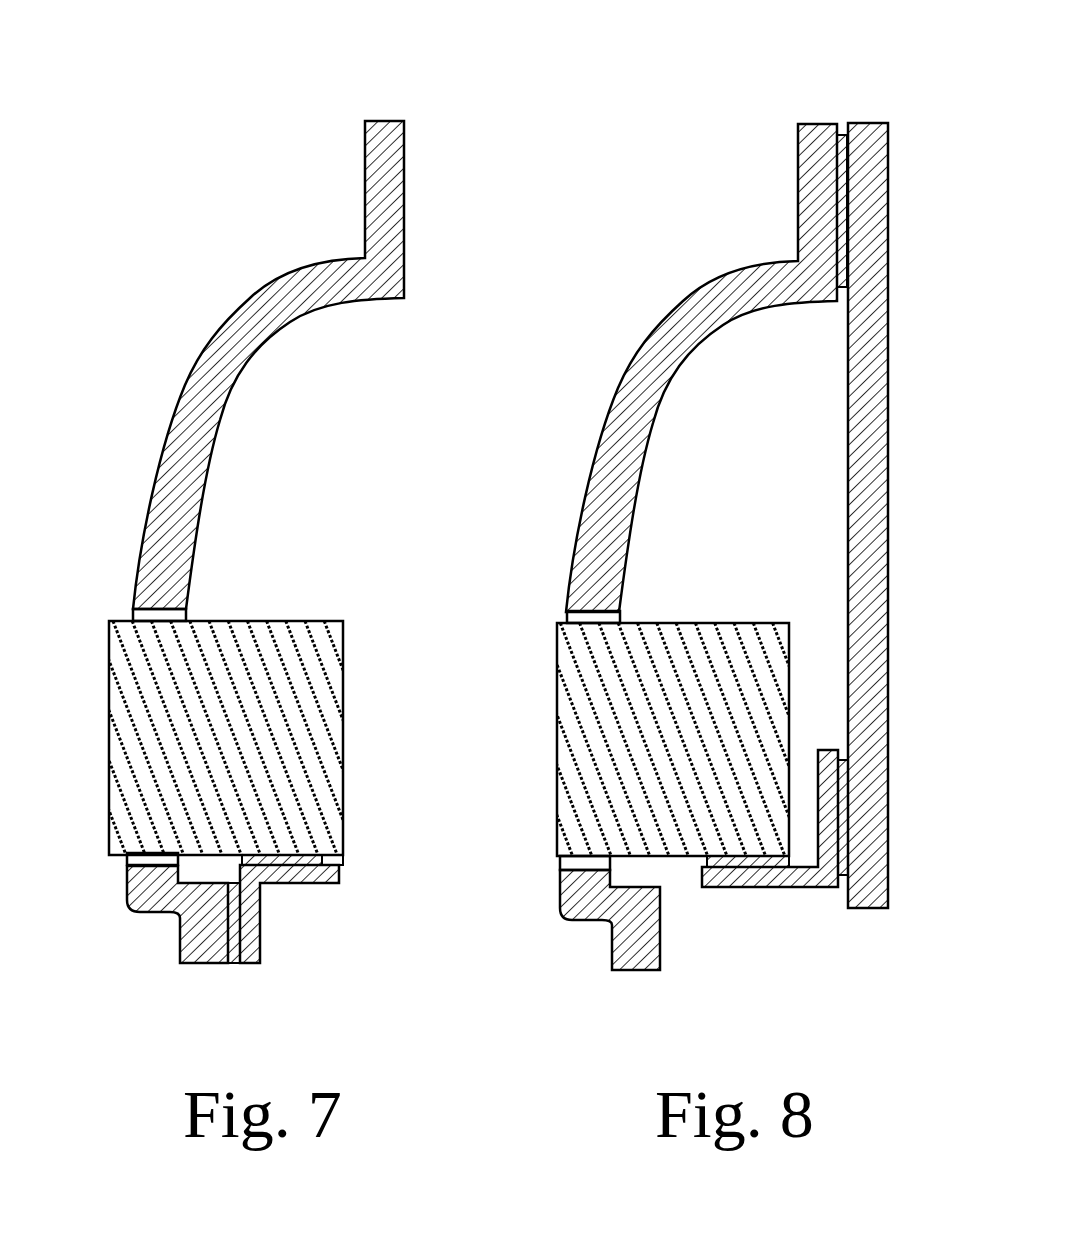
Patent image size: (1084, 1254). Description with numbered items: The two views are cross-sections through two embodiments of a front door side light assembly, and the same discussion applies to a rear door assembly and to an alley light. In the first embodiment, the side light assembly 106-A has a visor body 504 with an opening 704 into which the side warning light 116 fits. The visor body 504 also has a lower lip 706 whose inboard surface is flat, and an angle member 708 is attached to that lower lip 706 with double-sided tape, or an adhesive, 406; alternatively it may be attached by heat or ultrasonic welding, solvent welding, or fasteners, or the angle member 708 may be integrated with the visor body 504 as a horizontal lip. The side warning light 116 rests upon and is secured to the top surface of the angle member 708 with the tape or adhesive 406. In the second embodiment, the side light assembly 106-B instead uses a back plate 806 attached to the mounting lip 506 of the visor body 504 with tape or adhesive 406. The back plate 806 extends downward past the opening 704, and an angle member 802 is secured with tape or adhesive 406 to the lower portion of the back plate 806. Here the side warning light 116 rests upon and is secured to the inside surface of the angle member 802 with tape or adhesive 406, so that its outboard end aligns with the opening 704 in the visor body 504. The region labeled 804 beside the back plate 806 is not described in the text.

In FIG. 7, the side light assembly 106-A is at (122, 154).
In FIG. 8, the side light assembly 106-B is at (591, 154).
In FIG. 7, the side warning light 116 is at (343, 743).
In FIG. 8, the side warning light 116 is at (657, 623).
In FIG. 7, the double-sided tape, or an adhesive 406 is at (342, 860).
In FIG. 8, the double-sided tape, or an adhesive 406 is at (843, 133).
In FIG. 7, the visor body 504 is at (227, 322).
In FIG. 8, the visor body 504 is at (670, 312).
In FIG. 7, the mounting lip 506 is at (365, 193).
In FIG. 8, the mounting lip 506 is at (798, 195).
In FIG. 7, the opening 704 is at (133, 613).
In FIG. 8, the opening 704 is at (567, 613).
In FIG. 7, the lower lip 706 is at (180, 947).
In FIG. 8, the lower lip 706 is at (613, 952).
In FIG. 7, the angle member 708 is at (263, 902).
In FIG. 8, the angle member 802 is at (752, 887).
In FIG. 8, the vertical plate 804 is at (848, 378).
In FIG. 8, the back plate 806 is at (888, 182).